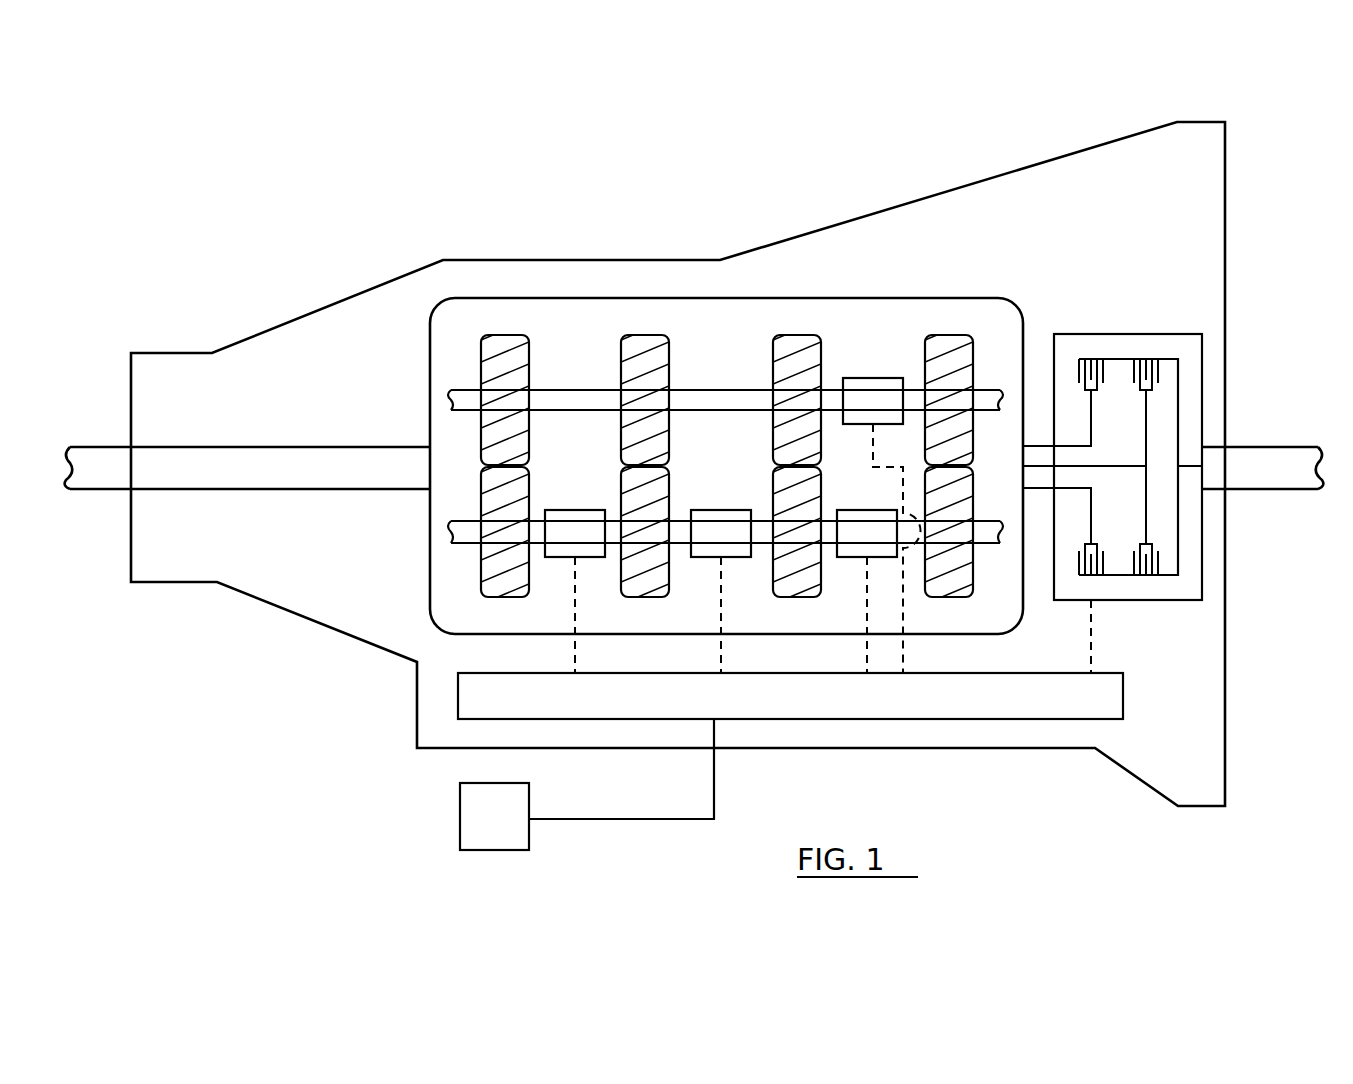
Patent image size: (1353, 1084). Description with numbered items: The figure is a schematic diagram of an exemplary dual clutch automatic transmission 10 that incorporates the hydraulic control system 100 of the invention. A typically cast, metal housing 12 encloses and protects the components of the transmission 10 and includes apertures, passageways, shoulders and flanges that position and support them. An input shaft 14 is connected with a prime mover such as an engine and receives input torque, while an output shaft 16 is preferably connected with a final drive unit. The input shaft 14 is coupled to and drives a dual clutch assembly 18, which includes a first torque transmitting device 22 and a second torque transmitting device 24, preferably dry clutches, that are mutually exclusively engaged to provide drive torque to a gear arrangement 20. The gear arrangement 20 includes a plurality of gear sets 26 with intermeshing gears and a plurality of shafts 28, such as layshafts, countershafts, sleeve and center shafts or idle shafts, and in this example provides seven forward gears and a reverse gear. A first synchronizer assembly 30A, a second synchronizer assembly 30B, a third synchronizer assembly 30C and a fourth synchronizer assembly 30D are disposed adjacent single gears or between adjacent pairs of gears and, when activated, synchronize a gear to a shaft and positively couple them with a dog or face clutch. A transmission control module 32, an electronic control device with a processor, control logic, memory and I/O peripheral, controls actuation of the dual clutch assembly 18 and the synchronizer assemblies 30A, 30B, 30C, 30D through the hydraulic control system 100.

The dual clutch transmission 10 is at (1268, 122).
The housing 12 is at (515, 260).
The input shaft 14 is at (1275, 447).
The output shaft 16 is at (95, 447).
The dual clutch assembly 18 is at (1203, 348).
The gear arrangement 20 is at (483, 298).
The first torque transmitting device 22 is at (1103, 556).
The second torque transmitting device 24 is at (1158, 558).
The gear sets 26 is at (510, 335).
The shafts 28 is at (587, 390).
The first synchronizer assembly 30A is at (575, 591).
The second synchronizer assembly 30B is at (721, 591).
The third synchronizer assembly 30C is at (867, 591).
The fourth synchronizer assembly 30D is at (882, 525).
The transmission control module 32 is at (494, 816).
The hydraulic control system 100 is at (790, 746).